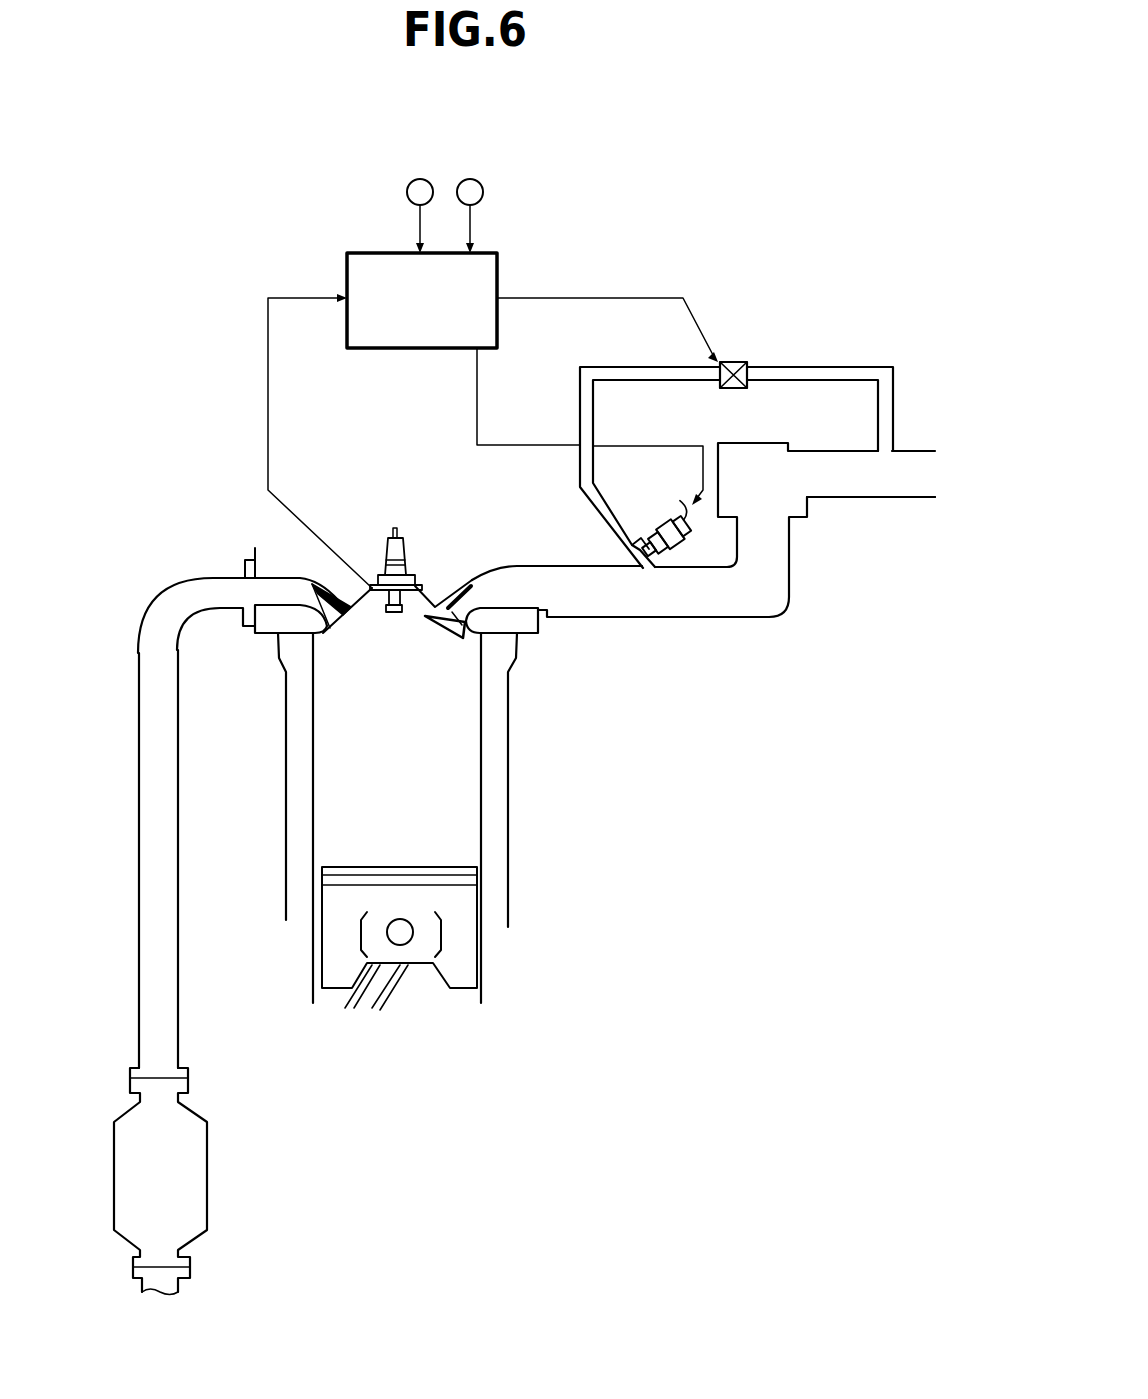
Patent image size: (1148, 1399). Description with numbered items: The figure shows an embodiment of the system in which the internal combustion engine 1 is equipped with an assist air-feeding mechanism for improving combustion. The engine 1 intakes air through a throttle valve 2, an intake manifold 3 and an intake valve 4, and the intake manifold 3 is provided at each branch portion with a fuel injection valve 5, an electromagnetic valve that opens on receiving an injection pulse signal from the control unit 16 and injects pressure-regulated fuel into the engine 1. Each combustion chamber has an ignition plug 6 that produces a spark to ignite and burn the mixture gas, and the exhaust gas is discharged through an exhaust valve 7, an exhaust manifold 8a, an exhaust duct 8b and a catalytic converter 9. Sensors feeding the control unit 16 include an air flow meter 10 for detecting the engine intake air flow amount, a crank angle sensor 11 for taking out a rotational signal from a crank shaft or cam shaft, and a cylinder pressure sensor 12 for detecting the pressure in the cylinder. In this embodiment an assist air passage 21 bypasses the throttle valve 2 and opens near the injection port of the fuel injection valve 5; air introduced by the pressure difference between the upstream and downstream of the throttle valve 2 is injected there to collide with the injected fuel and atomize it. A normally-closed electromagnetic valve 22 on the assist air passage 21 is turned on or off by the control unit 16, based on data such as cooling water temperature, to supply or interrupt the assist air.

The internal combustion engine 1 is at (469, 546).
The throttle valve 2 is at (858, 455).
The intake manifold 3 is at (635, 604).
The intake valve 4 is at (463, 633).
The fuel injection valve 5 is at (662, 521).
The ignition plug 6 is at (390, 538).
The exhaust valve 7 is at (337, 635).
The exhaust manifold 8a is at (222, 590).
The exhaust duct 8b is at (180, 806).
The catalytic converter 9 is at (193, 1155).
The air flow meter 10 is at (418, 179).
The crank angle sensor 11 is at (476, 182).
The cylinder pressure sensor 12 is at (420, 585).
The control unit 16 is at (500, 262).
The assist air passage 21 is at (820, 368).
The electromagnetic valve 22 is at (742, 360).